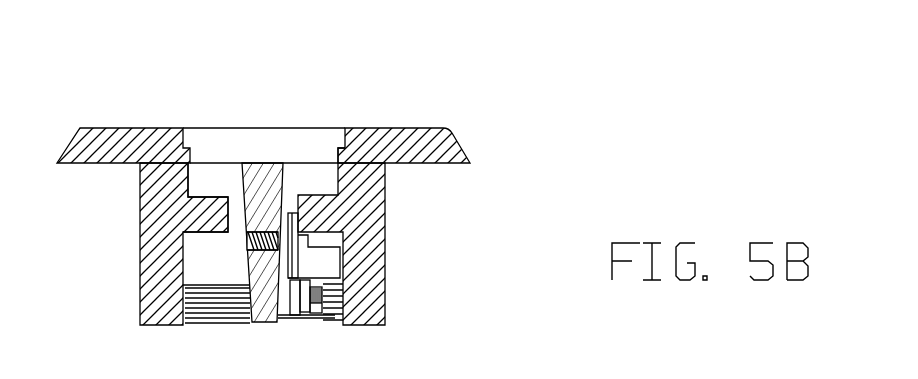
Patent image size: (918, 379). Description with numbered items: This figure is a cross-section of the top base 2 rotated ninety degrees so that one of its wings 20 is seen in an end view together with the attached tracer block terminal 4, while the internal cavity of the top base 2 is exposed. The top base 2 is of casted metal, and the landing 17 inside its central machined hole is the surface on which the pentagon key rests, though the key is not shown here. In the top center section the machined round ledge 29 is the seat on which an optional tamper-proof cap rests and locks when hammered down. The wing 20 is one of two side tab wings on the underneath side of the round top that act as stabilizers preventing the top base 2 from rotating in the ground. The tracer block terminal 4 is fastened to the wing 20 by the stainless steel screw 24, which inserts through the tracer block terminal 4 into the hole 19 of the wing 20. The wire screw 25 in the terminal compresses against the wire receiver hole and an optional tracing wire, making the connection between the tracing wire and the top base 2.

The top base 2 is at (462, 138).
The tracer block terminal 4 is at (293, 300).
The landing 17 is at (212, 222).
The hole 19 is at (247, 250).
The wing 20 is at (270, 150).
The stainless steel screw 24 is at (307, 252).
The wire screw 25 is at (340, 287).
The machined round ledge 29 is at (338, 150).